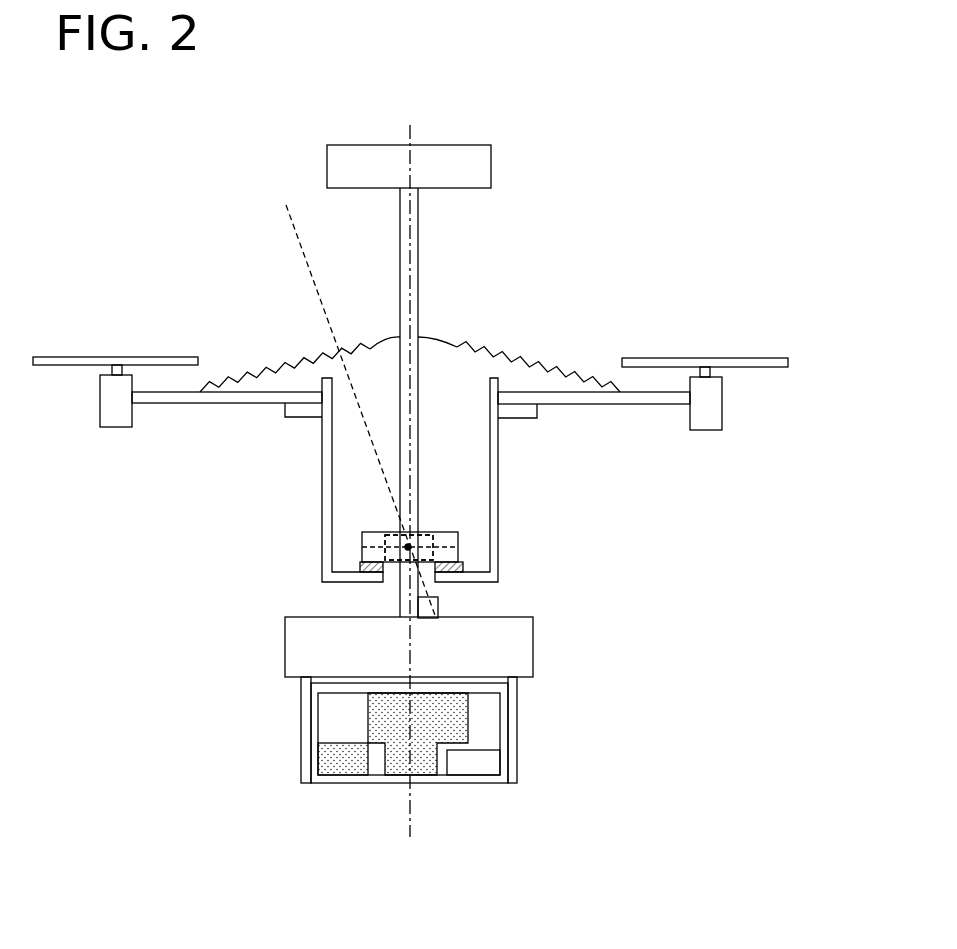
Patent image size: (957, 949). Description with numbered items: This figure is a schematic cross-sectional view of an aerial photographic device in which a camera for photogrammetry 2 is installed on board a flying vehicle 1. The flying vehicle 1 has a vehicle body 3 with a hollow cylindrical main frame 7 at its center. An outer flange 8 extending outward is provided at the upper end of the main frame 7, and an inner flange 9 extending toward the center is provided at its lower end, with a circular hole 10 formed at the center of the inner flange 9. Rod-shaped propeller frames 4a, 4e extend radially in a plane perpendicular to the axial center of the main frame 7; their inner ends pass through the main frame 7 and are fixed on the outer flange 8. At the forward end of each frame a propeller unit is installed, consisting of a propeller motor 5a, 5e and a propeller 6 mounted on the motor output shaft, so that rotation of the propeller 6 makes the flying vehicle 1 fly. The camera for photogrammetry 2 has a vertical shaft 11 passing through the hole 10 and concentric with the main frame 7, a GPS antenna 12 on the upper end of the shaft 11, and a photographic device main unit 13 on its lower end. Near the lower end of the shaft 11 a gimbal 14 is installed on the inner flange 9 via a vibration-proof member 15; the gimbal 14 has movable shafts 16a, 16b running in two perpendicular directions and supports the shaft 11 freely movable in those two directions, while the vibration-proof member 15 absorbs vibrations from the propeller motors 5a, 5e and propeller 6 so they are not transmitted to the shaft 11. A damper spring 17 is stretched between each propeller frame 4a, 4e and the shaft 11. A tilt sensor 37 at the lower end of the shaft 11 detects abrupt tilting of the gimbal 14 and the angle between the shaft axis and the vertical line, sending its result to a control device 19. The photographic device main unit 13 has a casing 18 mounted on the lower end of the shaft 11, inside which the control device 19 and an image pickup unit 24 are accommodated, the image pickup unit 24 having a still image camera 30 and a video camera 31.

The flying vehicle 1 is at (604, 300).
The camera for photogrammetry 2 is at (372, 280).
The vehicle body 3 is at (320, 462).
The propeller frame 4a is at (185, 403).
The propeller frame 4e is at (617, 404).
The propeller motor 5a is at (105, 427).
The propeller motor 5e is at (722, 412).
The propeller 6 is at (755, 358).
The main frame 7 is at (498, 512).
The outer flange 8 is at (520, 418).
The inner flange 9 is at (343, 585).
The circular hole 10 is at (388, 578).
The shaft 11 is at (420, 278).
The GPS antenna 12 is at (472, 145).
The photographic device main unit 13 is at (517, 702).
The gimbal 14 is at (445, 533).
The vibration-proof member 15 is at (353, 567).
The movable shaft 16a is at (388, 536).
The movable shaft 16b is at (434, 537).
The damper spring 17 is at (300, 362).
The casing 18 is at (517, 762).
The control device 19 is at (478, 750).
The image pickup unit 24 is at (388, 797).
The still image camera 30 is at (383, 762).
The video camera 31 is at (328, 775).
The tilt sensor 37 is at (438, 603).